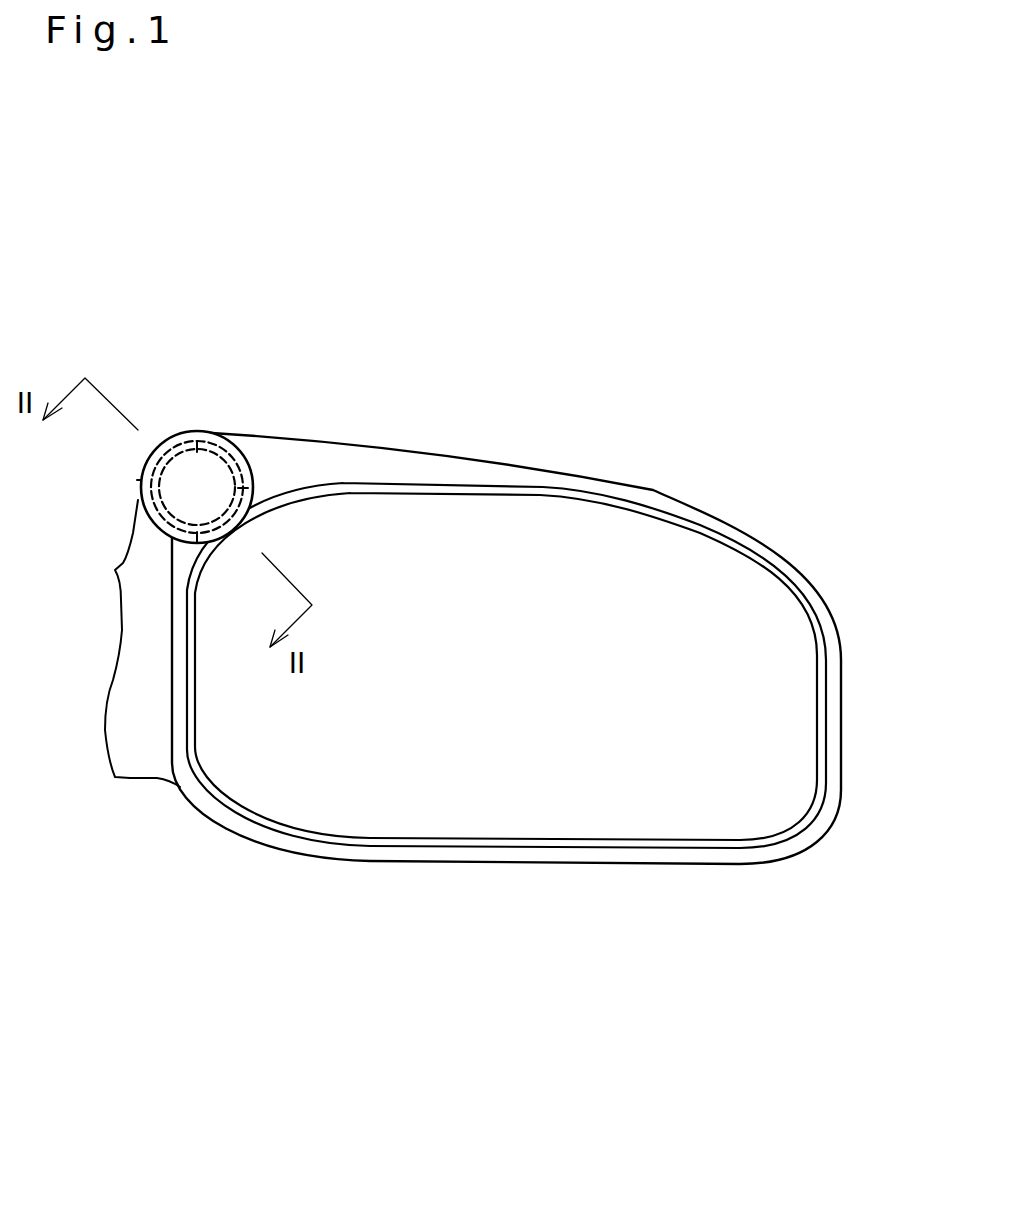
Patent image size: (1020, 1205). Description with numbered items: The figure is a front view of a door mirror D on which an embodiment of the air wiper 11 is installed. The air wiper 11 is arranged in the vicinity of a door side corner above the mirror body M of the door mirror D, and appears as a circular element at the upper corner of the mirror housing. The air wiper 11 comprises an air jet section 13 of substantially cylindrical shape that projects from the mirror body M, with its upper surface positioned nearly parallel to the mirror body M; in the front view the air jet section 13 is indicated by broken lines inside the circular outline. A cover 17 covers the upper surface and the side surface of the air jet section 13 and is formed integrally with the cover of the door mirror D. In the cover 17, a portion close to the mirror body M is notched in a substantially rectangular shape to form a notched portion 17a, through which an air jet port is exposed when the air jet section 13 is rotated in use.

The air wiper 11 is at (173, 435).
The air jet section 13 is at (197, 441).
The cover 17 is at (145, 480).
The notched portion 17a is at (246, 460).
The door mirror D is at (692, 490).
The mirror body M is at (621, 820).